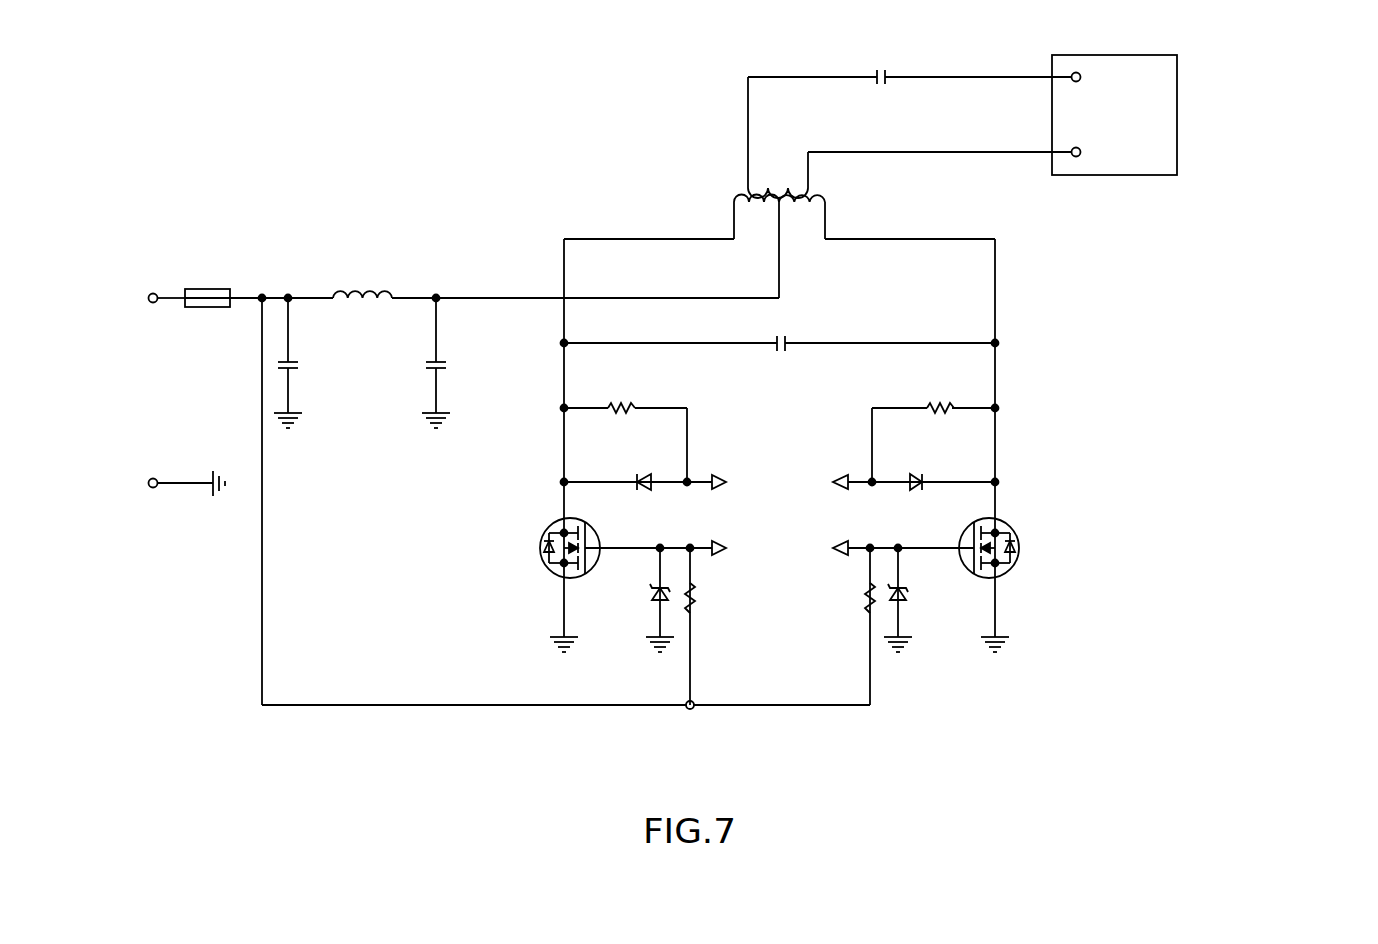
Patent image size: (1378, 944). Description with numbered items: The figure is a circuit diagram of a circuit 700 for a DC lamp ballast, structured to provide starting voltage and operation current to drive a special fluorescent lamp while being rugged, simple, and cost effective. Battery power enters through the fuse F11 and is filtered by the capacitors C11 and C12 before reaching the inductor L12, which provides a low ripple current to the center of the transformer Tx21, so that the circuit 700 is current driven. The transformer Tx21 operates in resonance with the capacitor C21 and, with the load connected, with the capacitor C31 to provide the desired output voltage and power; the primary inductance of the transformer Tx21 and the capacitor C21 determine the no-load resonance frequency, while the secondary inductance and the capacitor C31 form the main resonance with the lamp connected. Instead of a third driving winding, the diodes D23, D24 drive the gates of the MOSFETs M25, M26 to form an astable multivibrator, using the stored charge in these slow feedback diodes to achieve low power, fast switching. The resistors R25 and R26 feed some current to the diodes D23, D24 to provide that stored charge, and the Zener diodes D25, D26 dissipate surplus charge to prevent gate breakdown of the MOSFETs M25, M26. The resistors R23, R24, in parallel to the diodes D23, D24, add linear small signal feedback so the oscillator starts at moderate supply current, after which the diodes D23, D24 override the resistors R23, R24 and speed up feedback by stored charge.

The circuit 700 is at (263, 767).
The fuse 1.6A TL F11 is at (208, 300).
The inductor L12 is at (364, 308).
The capacitor 100u 35V C11 is at (344, 375).
The capacitor 2.2n 50V C12 is at (488, 375).
The transformer Tx21 is at (968, 249).
The capacitor C21 is at (779, 358).
The capacitor C31 is at (910, 92).
The resistor R23 is at (933, 427).
The resistor R24 is at (625, 429).
The resistor R25 is at (714, 626).
The resistor R26 is at (846, 626).
The diode D23 is at (862, 504).
The diode D24 is at (699, 504).
The Zener diode D25 is at (607, 609).
The Zener diode D26 is at (959, 609).
The MOSFET M25 is at (527, 548).
The MOSFET M26 is at (1032, 548).